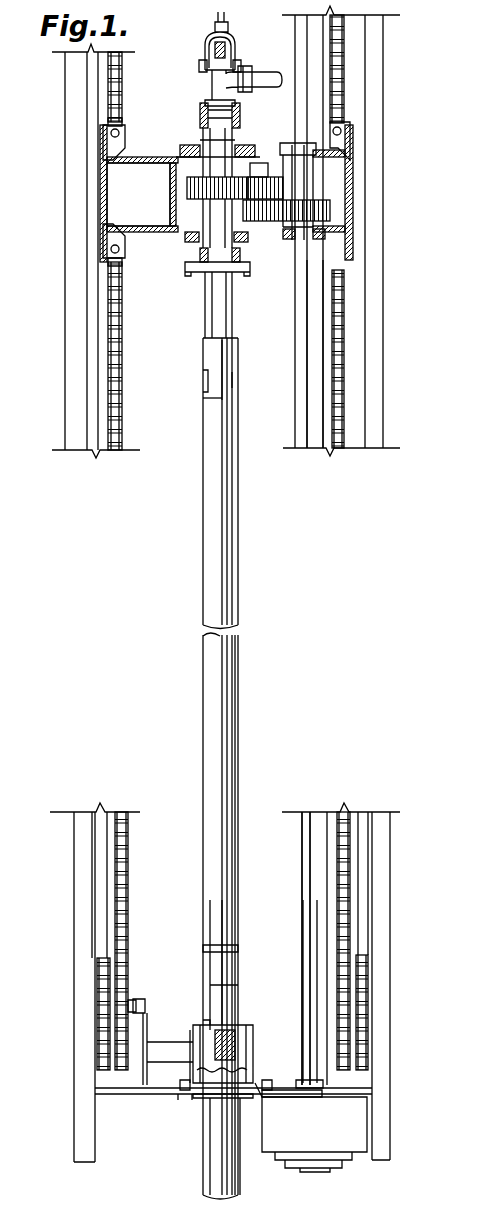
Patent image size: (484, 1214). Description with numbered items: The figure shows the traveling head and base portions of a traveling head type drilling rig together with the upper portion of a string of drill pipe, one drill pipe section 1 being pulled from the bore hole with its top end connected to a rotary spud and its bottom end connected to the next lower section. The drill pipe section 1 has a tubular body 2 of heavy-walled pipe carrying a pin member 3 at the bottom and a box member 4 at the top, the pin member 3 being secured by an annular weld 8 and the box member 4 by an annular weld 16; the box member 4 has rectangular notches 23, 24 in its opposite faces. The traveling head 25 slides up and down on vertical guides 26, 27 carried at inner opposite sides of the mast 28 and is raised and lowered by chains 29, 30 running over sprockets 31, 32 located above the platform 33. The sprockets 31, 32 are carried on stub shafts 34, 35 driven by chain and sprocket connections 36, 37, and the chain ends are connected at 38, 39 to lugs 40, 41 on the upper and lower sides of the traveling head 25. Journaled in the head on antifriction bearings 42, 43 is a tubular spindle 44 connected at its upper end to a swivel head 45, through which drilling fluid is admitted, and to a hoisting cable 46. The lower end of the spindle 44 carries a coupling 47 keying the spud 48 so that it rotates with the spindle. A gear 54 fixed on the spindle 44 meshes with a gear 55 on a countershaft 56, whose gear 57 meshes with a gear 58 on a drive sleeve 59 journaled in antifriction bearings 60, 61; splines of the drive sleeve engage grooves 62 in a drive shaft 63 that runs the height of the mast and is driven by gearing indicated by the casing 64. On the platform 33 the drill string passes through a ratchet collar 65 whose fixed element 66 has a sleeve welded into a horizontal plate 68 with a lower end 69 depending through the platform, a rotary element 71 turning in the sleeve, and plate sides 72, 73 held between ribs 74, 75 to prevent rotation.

The drill pipe section 1 is at (240, 677).
The tubular body 2 is at (232, 587).
The pin member 3 is at (237, 961).
The box member 4 is at (238, 359).
The annular weld 8 is at (203, 949).
The annular weld 16 is at (212, 401).
The rectangular notch 23 is at (203, 381).
The rectangular notch 24 is at (235, 383).
The traveling head 25 is at (100, 193).
The vertical guide 26 is at (88, 88).
The vertical guide 27 is at (360, 60).
The mast 28 is at (385, 157).
The chain 29 is at (110, 367).
The chain 30 is at (340, 353).
The sprocket 31 is at (130, 1006).
The sprocket 32 is at (331, 994).
The platform 33 is at (145, 1097).
The stub shaft 34 is at (160, 1000).
The stub shaft 35 is at (325, 1011).
The chain and sprocket connection 36 is at (102, 1014).
The chain and sprocket connection 37 is at (350, 1021).
The chain end connection 38 is at (122, 122).
The chain end connection 39 is at (122, 266).
The lug 40 is at (126, 133).
The lug 41 is at (126, 248).
The antifriction bearing 42 is at (190, 149).
The antifriction bearing 43 is at (195, 245).
The tubular spindle 44 is at (200, 208).
The swivel head 45 is at (205, 113).
The hoisting cable 46 is at (224, 18).
The coupling 47 is at (245, 273).
The spud 48 is at (235, 304).
The gear 54 is at (190, 186).
The gear 55 is at (260, 183).
The countershaft 56 is at (258, 160).
The gear 57 is at (290, 206).
The gear 58 is at (330, 210).
The drive sleeve 59 is at (330, 190).
The antifriction bearing 60 is at (355, 148).
The antifriction bearing 61 is at (350, 231).
The groove 62 is at (310, 300).
The drive shaft 63 is at (325, 395).
The casing 64 is at (355, 1126).
The ratchet collar 65 is at (188, 1073).
The fixed element 66 is at (251, 1083).
The horizontal plate 68 is at (200, 1098).
The lower end 69 is at (215, 1101).
The rotary element 71 is at (193, 1051).
The side 72 is at (180, 1101).
The side 73 is at (265, 1096).
The rib 74 is at (182, 1091).
The rib 75 is at (285, 1100).